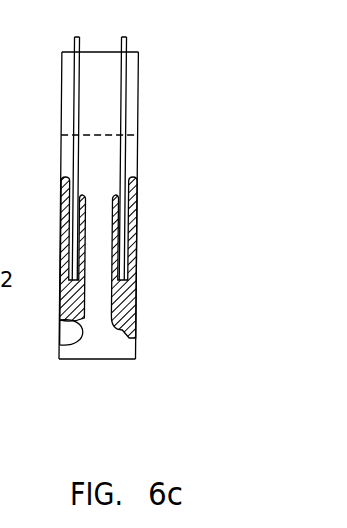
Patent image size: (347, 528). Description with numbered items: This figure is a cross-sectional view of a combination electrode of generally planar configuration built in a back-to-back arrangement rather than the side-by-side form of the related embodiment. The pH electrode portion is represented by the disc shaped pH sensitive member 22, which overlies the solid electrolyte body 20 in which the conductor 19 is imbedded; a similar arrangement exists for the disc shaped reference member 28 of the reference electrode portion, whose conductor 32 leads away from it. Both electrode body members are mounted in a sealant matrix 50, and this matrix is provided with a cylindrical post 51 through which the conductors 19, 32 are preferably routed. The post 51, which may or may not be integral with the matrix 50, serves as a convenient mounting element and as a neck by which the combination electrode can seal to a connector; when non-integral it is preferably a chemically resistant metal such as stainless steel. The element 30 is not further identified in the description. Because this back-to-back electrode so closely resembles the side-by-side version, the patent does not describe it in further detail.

The conductor 19 is at (129, 42).
The solid electrolyte body 20 is at (127, 227).
The pH sensitive member 22 is at (135, 255).
The reference member 28 is at (59, 258).
The sleeve tip 30 is at (58, 344).
The conductor 32 is at (74, 43).
The sealant matrix 50 is at (125, 359).
The cylindrical post 51 is at (139, 98).